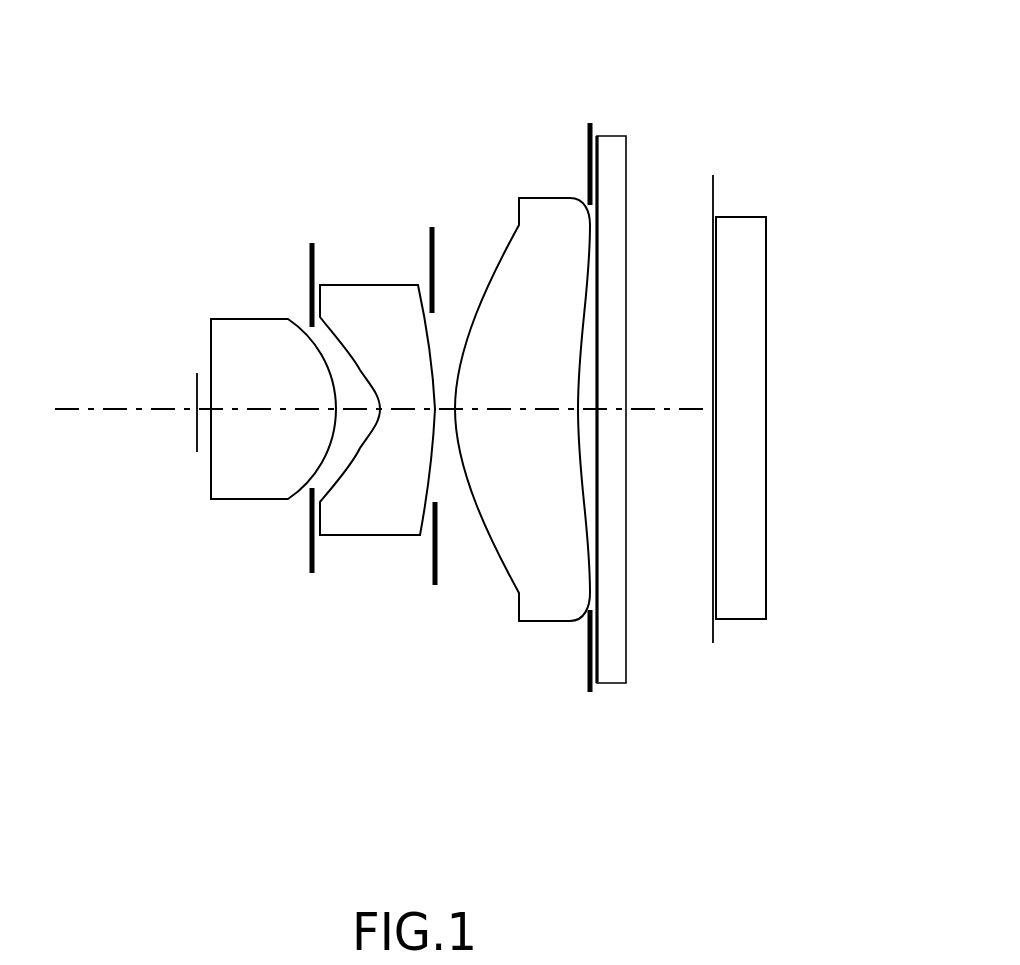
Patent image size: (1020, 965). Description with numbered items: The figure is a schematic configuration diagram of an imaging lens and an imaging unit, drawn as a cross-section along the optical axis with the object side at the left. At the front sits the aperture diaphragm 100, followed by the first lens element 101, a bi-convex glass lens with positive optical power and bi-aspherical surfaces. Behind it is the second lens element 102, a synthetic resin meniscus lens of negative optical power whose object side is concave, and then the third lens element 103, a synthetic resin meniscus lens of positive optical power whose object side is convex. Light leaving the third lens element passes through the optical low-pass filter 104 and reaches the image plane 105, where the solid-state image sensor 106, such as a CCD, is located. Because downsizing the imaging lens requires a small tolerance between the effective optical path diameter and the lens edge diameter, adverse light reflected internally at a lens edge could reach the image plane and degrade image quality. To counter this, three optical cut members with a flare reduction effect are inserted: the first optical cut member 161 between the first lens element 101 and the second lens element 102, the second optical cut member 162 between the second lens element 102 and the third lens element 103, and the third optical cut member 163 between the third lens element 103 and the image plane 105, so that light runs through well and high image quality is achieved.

The aperture diaphragm 100 is at (198, 374).
The first lens element 101 is at (267, 361).
The second lens element 102 is at (392, 318).
The third lens element 103 is at (541, 264).
The optical low-pass filter 104 is at (610, 154).
The image plane 105 is at (716, 213).
The solid-state image sensor 106 is at (769, 344).
The first optical cut member 161 is at (300, 557).
The second optical cut member 162 is at (427, 575).
The third optical cut member 163 is at (582, 682).